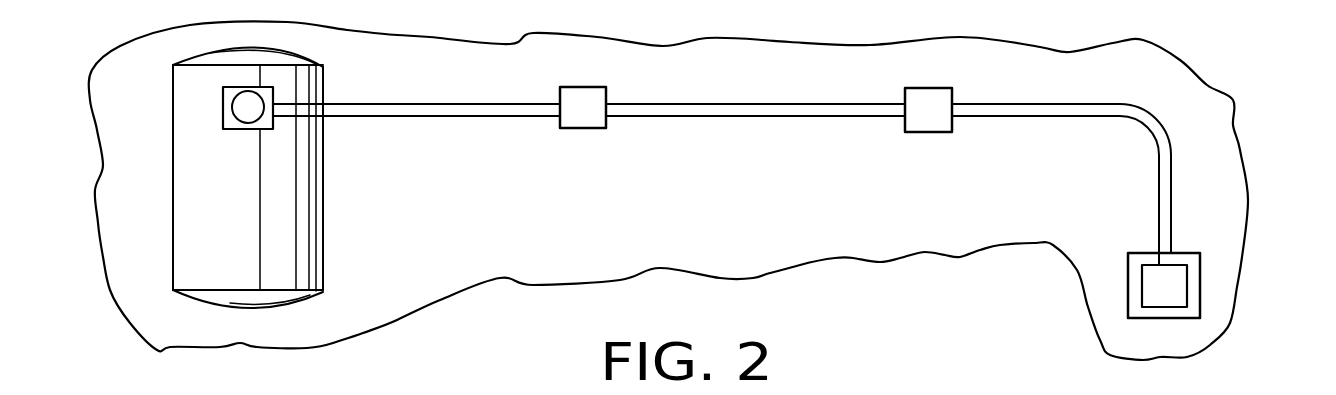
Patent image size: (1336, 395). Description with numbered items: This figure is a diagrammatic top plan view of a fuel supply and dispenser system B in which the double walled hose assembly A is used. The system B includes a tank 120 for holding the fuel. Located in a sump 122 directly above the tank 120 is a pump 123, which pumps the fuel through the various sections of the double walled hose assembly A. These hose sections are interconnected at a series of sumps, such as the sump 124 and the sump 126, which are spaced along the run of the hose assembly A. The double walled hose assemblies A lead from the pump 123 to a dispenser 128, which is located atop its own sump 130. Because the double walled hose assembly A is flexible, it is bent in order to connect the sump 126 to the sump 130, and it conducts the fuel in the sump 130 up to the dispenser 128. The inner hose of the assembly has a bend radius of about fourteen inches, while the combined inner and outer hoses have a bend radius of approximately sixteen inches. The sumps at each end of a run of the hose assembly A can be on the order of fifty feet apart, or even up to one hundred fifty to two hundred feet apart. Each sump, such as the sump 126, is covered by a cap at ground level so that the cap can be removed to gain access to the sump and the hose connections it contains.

The tank 120 is at (278, 233).
The sump 122 is at (265, 122).
The pump 123 is at (253, 102).
The sump 124 is at (583, 115).
The sump 126 is at (923, 118).
The dispenser 128 is at (1167, 293).
The sump 130 is at (1193, 267).
The double walled hose assembly A is at (742, 103).
The fuel supply and dispenser system B is at (853, 258).